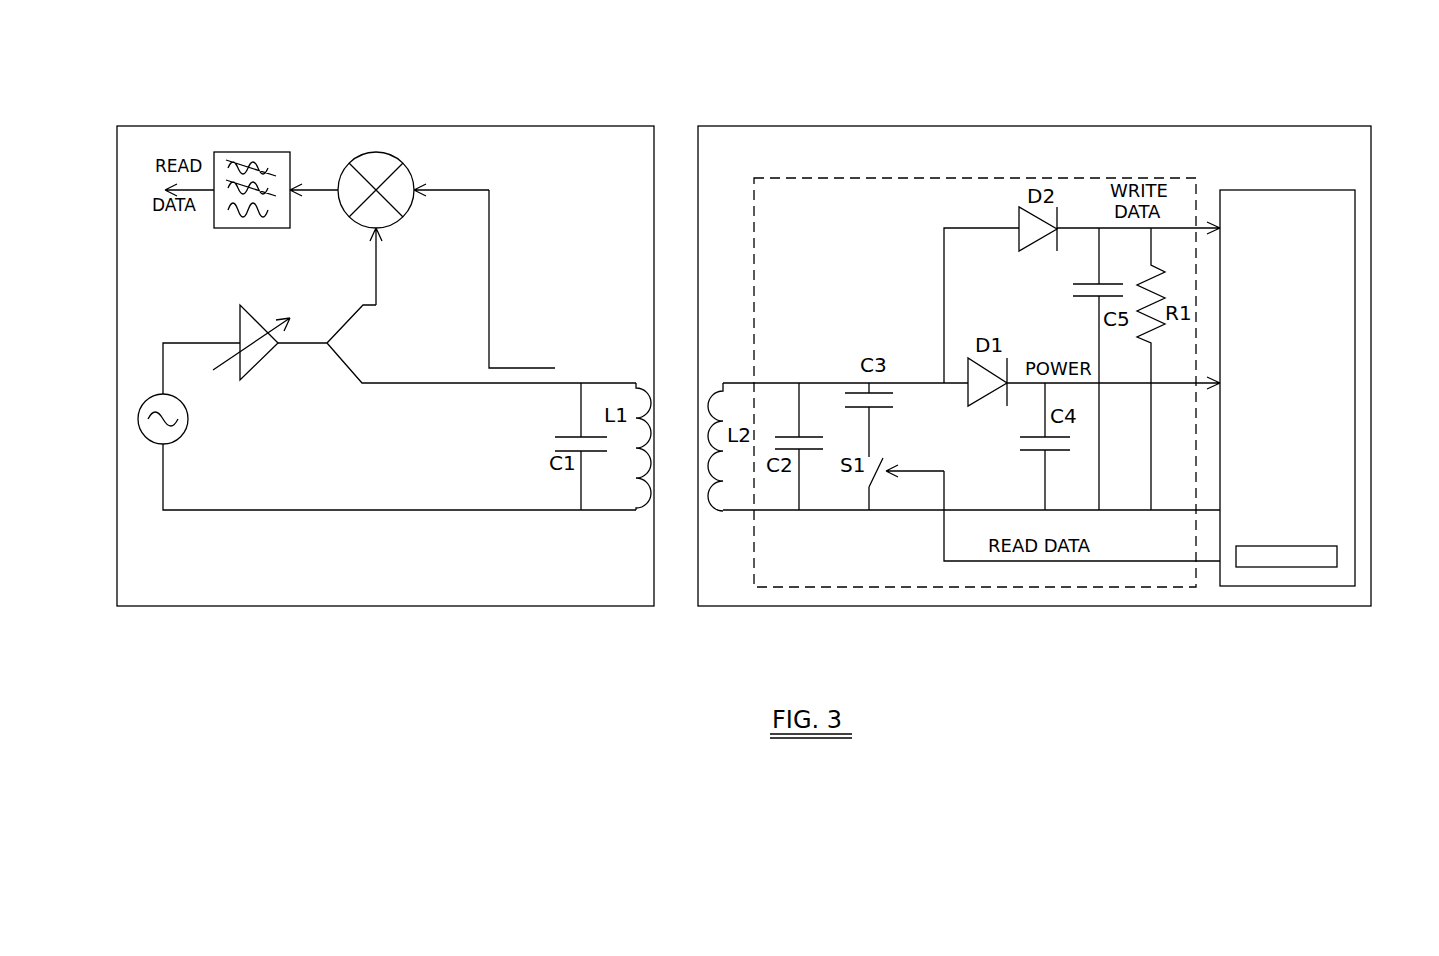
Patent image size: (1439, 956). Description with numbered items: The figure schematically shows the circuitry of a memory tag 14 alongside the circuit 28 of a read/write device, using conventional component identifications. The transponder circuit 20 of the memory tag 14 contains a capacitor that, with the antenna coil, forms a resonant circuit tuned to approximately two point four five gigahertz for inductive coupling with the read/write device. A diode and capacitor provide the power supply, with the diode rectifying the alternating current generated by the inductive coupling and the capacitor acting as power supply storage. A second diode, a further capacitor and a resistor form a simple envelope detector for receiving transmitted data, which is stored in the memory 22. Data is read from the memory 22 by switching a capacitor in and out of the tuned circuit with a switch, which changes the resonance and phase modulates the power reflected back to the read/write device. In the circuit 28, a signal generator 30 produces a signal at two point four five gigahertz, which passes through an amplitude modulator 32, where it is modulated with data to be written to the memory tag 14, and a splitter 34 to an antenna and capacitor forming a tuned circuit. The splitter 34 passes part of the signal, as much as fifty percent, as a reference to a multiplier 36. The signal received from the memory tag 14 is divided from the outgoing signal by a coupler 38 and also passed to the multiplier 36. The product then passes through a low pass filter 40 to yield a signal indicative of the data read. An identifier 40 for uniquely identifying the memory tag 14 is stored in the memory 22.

The memory tag 14 is at (1241, 110).
The transponder circuit 20 is at (945, 588).
The memory 22 is at (1287, 388).
The circuit 28 is at (572, 111).
The signal generator 30 is at (162, 445).
The amplitude modulator 32 is at (240, 322).
The splitter 34 is at (351, 318).
The multiplier 36 is at (375, 165).
The coupler 38 is at (512, 375).
The low pass filter 40 is at (255, 152).